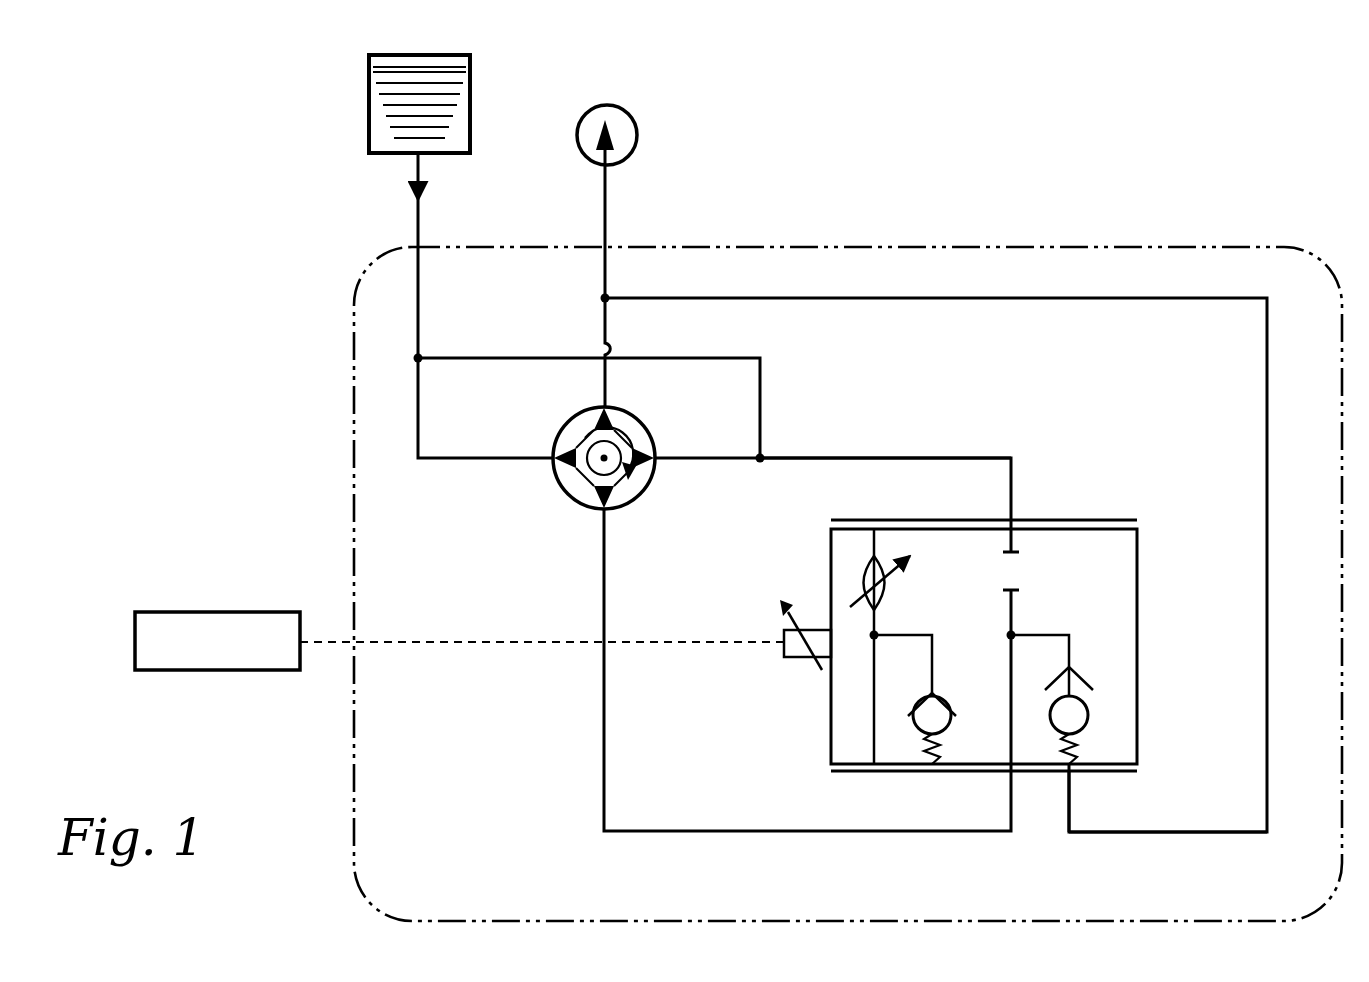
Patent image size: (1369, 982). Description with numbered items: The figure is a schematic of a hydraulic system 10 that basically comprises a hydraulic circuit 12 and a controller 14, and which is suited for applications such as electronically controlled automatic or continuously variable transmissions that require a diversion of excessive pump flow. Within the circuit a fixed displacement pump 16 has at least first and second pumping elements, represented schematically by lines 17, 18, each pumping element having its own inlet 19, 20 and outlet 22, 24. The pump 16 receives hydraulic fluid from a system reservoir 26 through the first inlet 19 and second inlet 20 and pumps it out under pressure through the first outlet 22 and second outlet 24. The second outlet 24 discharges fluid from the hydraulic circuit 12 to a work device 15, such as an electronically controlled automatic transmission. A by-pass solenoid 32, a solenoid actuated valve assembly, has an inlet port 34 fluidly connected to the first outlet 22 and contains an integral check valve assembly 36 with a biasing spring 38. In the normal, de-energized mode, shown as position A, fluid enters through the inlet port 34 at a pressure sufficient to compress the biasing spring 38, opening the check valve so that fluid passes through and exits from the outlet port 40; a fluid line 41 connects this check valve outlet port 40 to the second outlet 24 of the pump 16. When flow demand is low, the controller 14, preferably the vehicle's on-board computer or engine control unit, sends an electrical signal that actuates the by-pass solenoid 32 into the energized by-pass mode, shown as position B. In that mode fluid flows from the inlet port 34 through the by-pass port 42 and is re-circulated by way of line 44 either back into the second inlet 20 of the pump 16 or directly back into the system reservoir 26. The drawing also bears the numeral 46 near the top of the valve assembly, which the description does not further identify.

The hydraulic system 10 is at (948, 160).
The hydraulic circuit 12 is at (1100, 247).
The controller 14 is at (220, 612).
The work device 15 is at (637, 138).
The fixed displacement pump 16 is at (592, 468).
The first pumping element 17 is at (572, 485).
The second pumping element 18 is at (636, 445).
The first inlet 19 is at (445, 458).
The second inlet 20 is at (680, 460).
The first outlet 22 is at (606, 542).
The second outlet 24 is at (601, 268).
The system reservoir 26 is at (367, 100).
The by-pass solenoid 32 is at (1008, 646).
The inlet port 34 is at (1011, 771).
The check valve assembly 36 is at (1092, 665).
The biasing spring 38 is at (1080, 748).
The outlet port 40 is at (1070, 771).
The fluid line 41 is at (1180, 832).
The by-pass port 42 is at (1010, 522).
The line 44 is at (850, 458).
The valve port line 46 is at (1118, 520).